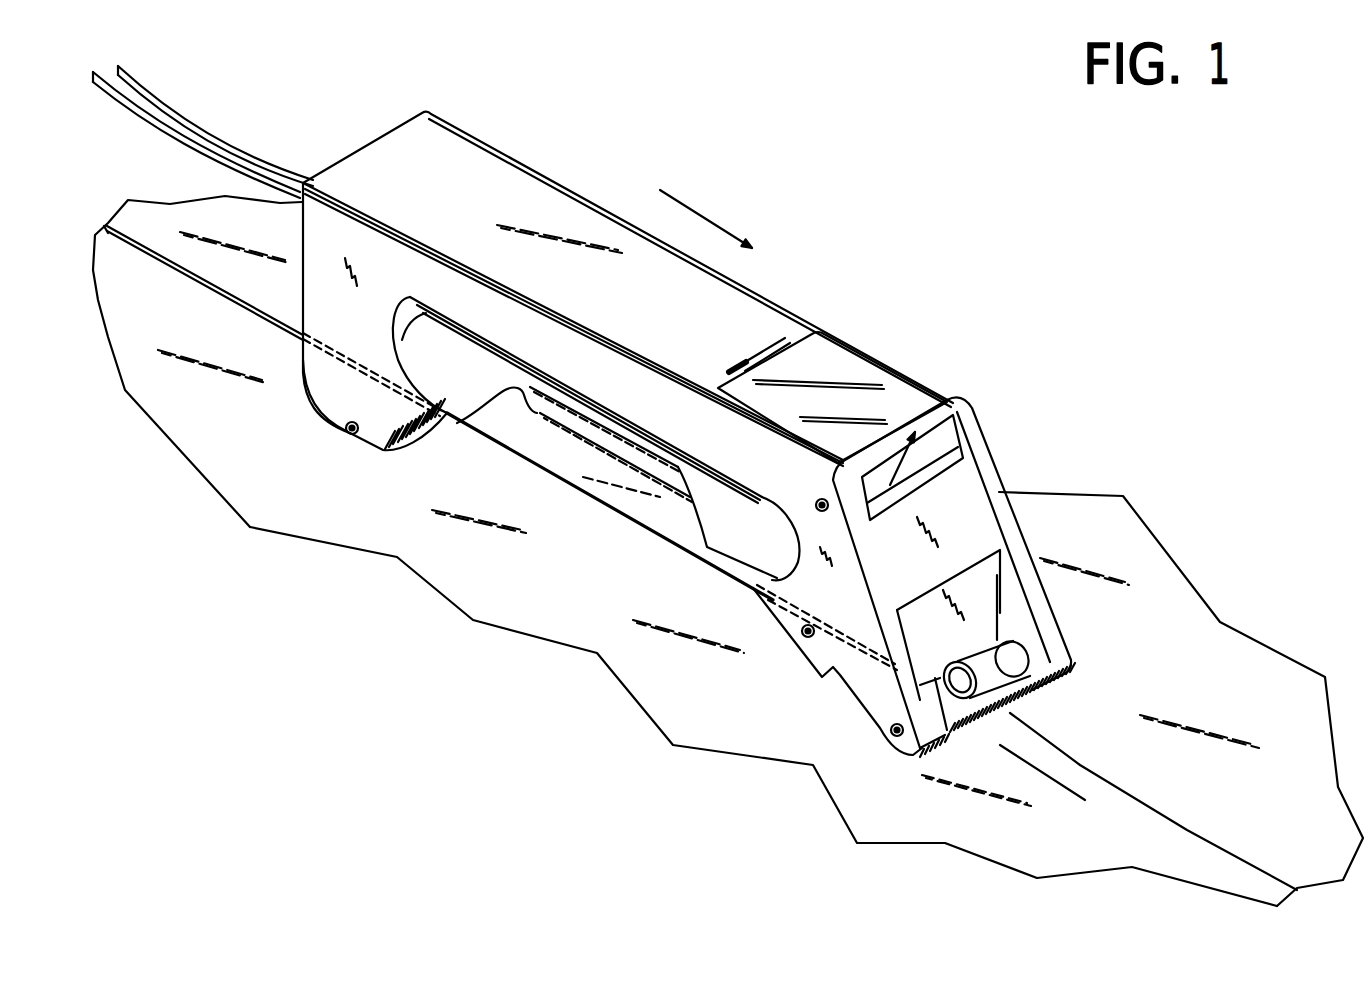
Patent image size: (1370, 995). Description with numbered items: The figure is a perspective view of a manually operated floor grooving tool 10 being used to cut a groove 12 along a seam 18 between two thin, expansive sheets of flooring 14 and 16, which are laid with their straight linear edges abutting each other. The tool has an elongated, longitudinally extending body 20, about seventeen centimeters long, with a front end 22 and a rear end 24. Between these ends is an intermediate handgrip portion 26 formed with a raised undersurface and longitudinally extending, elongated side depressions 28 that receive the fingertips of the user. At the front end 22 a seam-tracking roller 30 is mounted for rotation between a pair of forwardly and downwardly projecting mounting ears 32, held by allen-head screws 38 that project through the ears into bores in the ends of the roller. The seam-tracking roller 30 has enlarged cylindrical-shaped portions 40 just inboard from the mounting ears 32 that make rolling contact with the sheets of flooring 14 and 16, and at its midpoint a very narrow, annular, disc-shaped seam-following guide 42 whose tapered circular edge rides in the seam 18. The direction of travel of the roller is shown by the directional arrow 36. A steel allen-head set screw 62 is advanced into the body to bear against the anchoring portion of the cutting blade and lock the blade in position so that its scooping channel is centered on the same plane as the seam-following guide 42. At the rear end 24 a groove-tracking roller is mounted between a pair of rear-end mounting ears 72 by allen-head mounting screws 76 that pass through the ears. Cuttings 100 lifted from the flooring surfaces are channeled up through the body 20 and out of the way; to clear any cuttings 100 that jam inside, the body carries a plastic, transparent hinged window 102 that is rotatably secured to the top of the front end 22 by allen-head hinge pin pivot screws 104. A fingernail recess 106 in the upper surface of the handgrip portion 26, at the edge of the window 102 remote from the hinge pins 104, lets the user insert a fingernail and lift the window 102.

The floor grooving tool 10 is at (862, 150).
The groove 12 is at (152, 248).
The sheet of flooring 14 is at (1138, 560).
The sheet of flooring 16 is at (647, 680).
The seam 18 is at (1187, 829).
The body 20 is at (482, 178).
The front end 22 is at (977, 477).
The rear end 24 is at (327, 288).
The intermediate handgrip portion 26 is at (732, 302).
The side depressions 28 is at (732, 500).
The seam-tracking roller 30 is at (1003, 707).
The mounting ears 32 is at (865, 680).
The directional arrow 36 is at (703, 178).
The allen-head screws 38 is at (891, 737).
The enlarged cylindrical-shaped portions 40 is at (963, 743).
The seam-following guide 42 is at (945, 685).
The set screw 62 is at (800, 635).
The rear-end mounting ears 72 is at (337, 397).
The allen-head mounting screws 76 is at (352, 436).
The cuttings 100 is at (224, 129).
The hinged window 102 is at (857, 373).
The hinge pin pivot screws 104 is at (815, 510).
The fingernail recess 106 is at (772, 334).